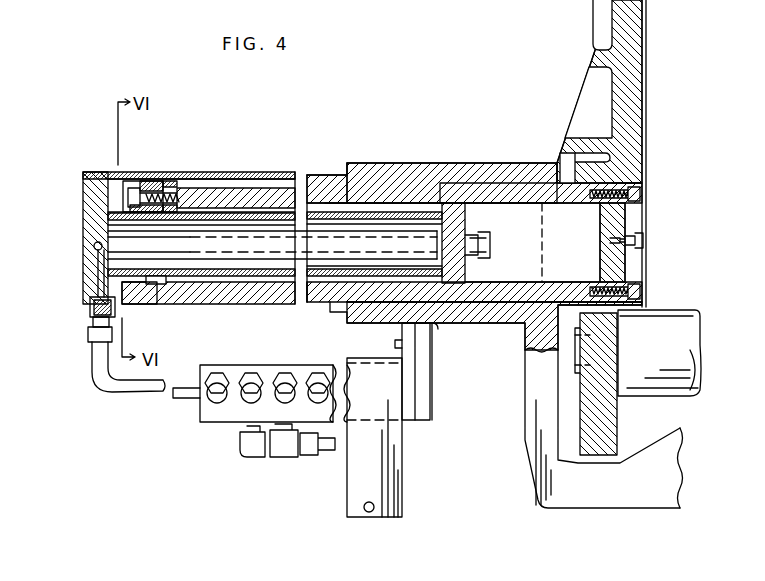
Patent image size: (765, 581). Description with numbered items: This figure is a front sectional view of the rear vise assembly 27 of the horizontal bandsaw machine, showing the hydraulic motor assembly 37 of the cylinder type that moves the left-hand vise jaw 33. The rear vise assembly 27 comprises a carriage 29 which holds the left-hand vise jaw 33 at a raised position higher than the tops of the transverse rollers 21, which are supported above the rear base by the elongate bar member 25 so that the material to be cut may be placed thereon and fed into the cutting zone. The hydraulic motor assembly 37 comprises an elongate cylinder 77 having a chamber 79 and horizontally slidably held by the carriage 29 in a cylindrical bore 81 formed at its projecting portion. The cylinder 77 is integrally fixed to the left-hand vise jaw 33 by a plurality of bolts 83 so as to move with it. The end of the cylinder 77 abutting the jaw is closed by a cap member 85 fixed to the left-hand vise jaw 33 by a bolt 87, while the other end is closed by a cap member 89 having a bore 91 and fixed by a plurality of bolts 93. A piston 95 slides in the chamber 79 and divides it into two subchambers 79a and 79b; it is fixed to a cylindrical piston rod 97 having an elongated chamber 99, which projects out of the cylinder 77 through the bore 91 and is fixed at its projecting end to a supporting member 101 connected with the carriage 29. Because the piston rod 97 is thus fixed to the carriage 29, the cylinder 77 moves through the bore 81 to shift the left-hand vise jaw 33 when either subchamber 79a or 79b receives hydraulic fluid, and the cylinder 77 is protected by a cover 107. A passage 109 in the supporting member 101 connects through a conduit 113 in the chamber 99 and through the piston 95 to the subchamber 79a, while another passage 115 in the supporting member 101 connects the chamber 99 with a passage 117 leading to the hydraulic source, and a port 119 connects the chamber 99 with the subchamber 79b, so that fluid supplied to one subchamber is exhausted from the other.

The transverse rollers 21 is at (656, 332).
The elongate bar member 25 is at (600, 425).
The rear vise assembly 27 is at (495, 112).
The carriage 29 is at (533, 460).
The left-hand vise jaw 33 is at (592, 58).
The hydraulic motor assembly 37 is at (268, 170).
The cylinder 77 is at (516, 322).
The chamber 79 is at (490, 300).
The subchamber 79a is at (527, 215).
The subchamber 79b is at (376, 200).
The cylindrical bore 81 is at (430, 326).
The bolts 83 is at (642, 191).
The cap member 85 is at (630, 214).
The bolt 87 is at (645, 240).
The cap member 89 is at (147, 190).
The bore 91 is at (157, 303).
The bolts 93 is at (175, 198).
The piston 95 is at (460, 228).
The piston rod 97 is at (313, 208).
The elongated chamber 99 is at (266, 252).
The supporting member 101 is at (92, 190).
The cover 107 is at (276, 170).
The passage 109 is at (93, 246).
The conduit 113 is at (216, 278).
The passage 115 is at (88, 302).
The passage 117 is at (102, 380).
The port 119 is at (418, 200).